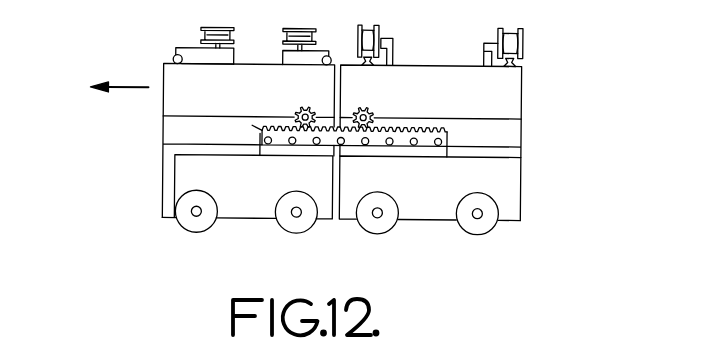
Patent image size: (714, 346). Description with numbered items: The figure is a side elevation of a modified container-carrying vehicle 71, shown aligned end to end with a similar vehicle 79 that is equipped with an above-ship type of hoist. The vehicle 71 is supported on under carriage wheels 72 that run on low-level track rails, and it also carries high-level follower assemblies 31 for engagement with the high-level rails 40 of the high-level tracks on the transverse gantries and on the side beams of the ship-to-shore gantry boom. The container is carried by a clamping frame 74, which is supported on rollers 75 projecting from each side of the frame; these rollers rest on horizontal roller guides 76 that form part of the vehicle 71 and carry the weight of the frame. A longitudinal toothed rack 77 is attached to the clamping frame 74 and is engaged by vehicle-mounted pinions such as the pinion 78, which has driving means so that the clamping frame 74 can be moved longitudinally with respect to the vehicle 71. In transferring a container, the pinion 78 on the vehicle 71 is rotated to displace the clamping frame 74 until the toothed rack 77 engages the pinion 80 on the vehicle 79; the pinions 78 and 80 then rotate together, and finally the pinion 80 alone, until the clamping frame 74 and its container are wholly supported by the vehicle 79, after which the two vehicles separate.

The high-level follower assembly 31 is at (363, 28).
The high-level rail 40 is at (483, 62).
The container-carrying vehicle 71 is at (483, 82).
The under carriage wheel 72 is at (297, 218).
The clamping frame 74 is at (260, 133).
The roller 75 is at (443, 141).
The horizontal roller guide 76 is at (185, 144).
The longitudinal toothed rack 77 is at (425, 126).
The pinion 78 is at (366, 107).
The vehicle with above-ship hoist 79 is at (182, 87).
The pinion 80 is at (309, 107).